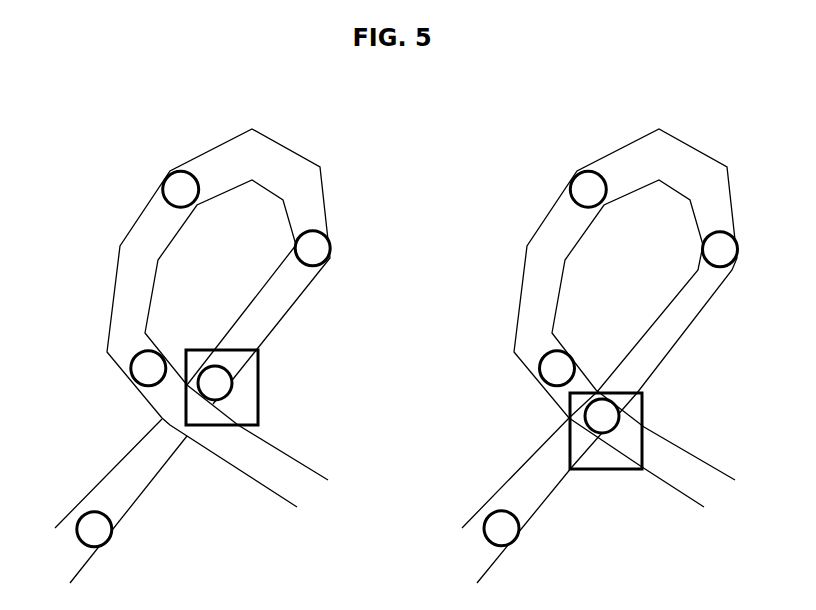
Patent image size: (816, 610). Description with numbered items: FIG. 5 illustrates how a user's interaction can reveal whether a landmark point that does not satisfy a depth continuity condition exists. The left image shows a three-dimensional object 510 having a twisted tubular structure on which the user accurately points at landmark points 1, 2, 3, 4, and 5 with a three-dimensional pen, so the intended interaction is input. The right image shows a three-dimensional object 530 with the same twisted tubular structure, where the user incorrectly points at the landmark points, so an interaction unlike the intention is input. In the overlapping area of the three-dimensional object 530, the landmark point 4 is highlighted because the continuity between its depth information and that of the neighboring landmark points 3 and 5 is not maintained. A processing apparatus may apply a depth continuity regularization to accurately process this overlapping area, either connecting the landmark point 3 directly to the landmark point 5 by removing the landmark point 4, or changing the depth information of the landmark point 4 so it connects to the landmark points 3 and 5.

The 3D object 510 is at (287, 146).
The 3D object 530 is at (695, 146).
The landmark point 1 is at (353, 368).
The landmark point 2 is at (385, 189).
The landmark point 3 is at (516, 249).
The landmark point 4 is at (414, 409).
The landmark point 5 is at (298, 529).